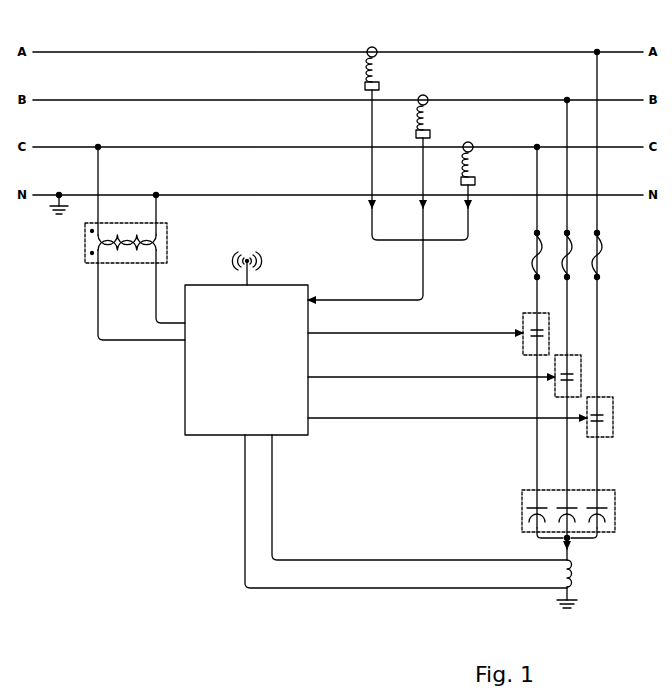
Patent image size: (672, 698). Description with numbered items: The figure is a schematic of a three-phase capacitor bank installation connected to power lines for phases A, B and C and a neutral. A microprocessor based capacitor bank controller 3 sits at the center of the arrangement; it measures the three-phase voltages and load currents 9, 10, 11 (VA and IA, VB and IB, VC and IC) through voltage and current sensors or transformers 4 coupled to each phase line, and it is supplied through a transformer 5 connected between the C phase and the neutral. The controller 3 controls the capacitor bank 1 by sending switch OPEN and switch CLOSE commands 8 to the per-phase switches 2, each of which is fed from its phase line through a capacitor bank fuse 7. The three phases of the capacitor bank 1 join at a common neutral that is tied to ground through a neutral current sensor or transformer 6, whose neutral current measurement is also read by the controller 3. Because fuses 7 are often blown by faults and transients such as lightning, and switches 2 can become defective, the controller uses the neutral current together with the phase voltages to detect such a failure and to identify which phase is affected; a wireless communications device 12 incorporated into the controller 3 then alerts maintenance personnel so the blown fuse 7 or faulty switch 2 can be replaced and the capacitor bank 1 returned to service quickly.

The capacitor bank 1 is at (623, 503).
The switches 2 is at (543, 308).
The capacitor bank controller 3 is at (177, 400).
The voltage and current sensors 4 is at (378, 45).
The transformer 5 is at (172, 247).
The neutral current sensor 6 is at (574, 576).
The capacitor bank fuses 7 is at (548, 253).
The switch OPEN and switch CLOSE commands 8 is at (510, 323).
The phase A voltage and load current measurement 9 is at (366, 214).
The phase B voltage and load current measurement 10 is at (413, 213).
The phase C voltage and load current measurement 11 is at (462, 214).
The wireless communications device 12 is at (268, 252).